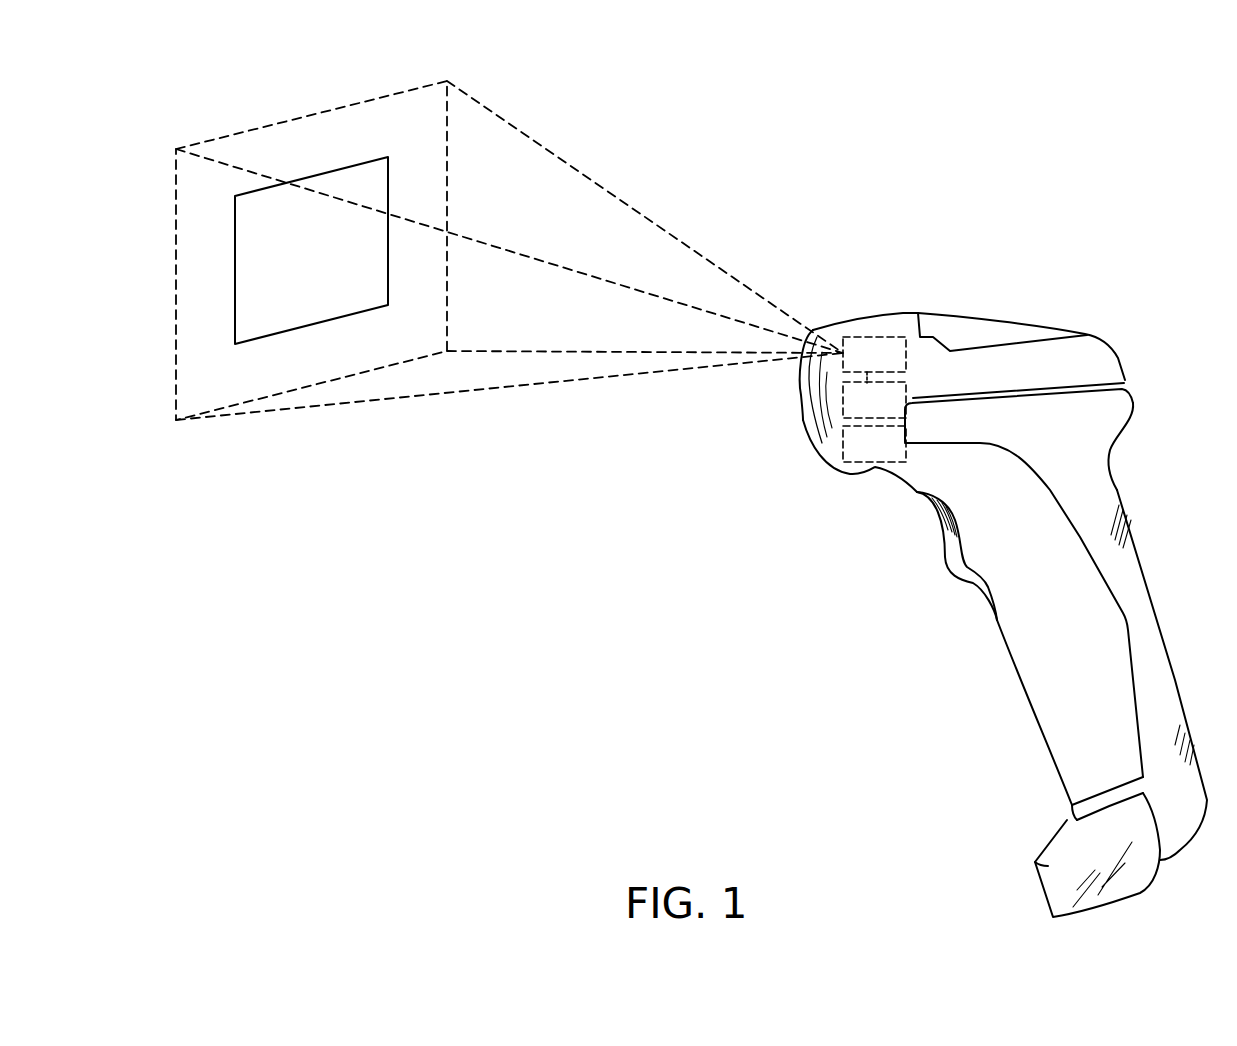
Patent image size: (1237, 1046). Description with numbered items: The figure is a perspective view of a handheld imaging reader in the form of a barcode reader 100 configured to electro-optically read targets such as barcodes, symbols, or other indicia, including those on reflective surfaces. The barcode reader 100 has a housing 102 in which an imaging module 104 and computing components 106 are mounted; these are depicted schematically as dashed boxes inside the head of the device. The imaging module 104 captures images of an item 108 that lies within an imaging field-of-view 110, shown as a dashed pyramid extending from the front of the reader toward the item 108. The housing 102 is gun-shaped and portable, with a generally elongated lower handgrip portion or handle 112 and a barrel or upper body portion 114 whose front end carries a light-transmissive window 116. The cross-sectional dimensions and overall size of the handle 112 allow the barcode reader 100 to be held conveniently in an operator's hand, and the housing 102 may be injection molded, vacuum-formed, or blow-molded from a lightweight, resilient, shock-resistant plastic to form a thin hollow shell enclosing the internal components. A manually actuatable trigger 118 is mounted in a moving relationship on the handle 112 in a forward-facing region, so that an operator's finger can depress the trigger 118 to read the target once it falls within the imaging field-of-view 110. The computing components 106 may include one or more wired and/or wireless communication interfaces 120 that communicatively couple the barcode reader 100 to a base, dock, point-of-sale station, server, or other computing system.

The barcode reader 100 is at (1140, 204).
The housing 102 is at (1030, 303).
The imaging module 104 is at (897, 366).
The computing components 106 is at (897, 412).
The item 108 is at (335, 264).
The imaging field-of-view 110 is at (313, 113).
The handle 112 is at (1157, 603).
The upper body portion 114 is at (1113, 353).
The light-transmissive window 116 is at (800, 408).
The trigger 118 is at (947, 560).
The communication interface 120 is at (897, 456).